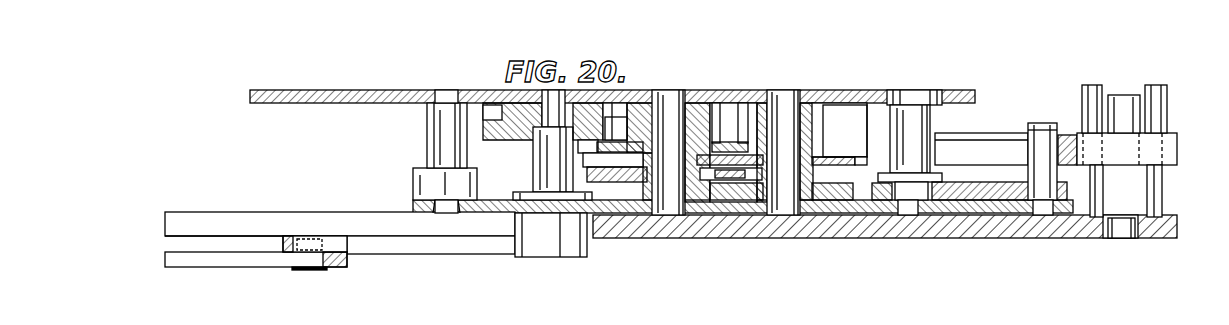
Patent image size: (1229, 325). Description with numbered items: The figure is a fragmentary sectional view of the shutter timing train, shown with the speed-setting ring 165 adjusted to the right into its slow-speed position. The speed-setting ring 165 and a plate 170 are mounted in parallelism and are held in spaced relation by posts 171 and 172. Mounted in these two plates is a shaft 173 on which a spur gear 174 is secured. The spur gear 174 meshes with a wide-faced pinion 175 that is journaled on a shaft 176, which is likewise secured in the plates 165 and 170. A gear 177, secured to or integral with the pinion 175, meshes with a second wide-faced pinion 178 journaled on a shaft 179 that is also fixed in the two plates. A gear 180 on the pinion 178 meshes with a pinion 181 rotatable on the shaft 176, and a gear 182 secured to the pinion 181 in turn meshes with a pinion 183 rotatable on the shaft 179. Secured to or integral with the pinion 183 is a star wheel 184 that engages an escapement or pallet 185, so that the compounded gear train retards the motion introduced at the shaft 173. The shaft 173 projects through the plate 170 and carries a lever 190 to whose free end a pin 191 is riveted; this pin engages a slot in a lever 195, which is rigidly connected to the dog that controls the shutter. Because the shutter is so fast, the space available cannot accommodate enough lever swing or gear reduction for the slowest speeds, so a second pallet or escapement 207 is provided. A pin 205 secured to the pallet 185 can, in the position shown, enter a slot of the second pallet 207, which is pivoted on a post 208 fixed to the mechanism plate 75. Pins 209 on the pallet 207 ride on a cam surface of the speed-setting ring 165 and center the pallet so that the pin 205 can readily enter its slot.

The mechanism plate 75 is at (1068, 237).
The speed-setting ring 165 is at (840, 92).
The plate 170 is at (627, 209).
The post 171 is at (437, 144).
The post 172 is at (893, 150).
The shaft 173 is at (540, 160).
The spur gear 174 is at (512, 132).
The wide-faced pinion 175 is at (645, 102).
The shaft 176 is at (673, 96).
The gear 177 is at (610, 153).
The wide-faced pinion 178 is at (760, 110).
The shaft 179 is at (784, 98).
The gear 180 is at (836, 157).
The pinion 181 is at (641, 160).
The gear 182 is at (598, 172).
The pinion 183 is at (822, 175).
The star wheel 184 is at (831, 200).
The escapement or pallet 185 is at (985, 200).
The lever 190 is at (514, 250).
The pin 191 is at (304, 270).
The lever 195 is at (231, 262).
The pin 205 is at (1028, 133).
The second pallet or escapement 207 is at (1064, 135).
The post 208 is at (1124, 113).
The pins 209 is at (1152, 90).